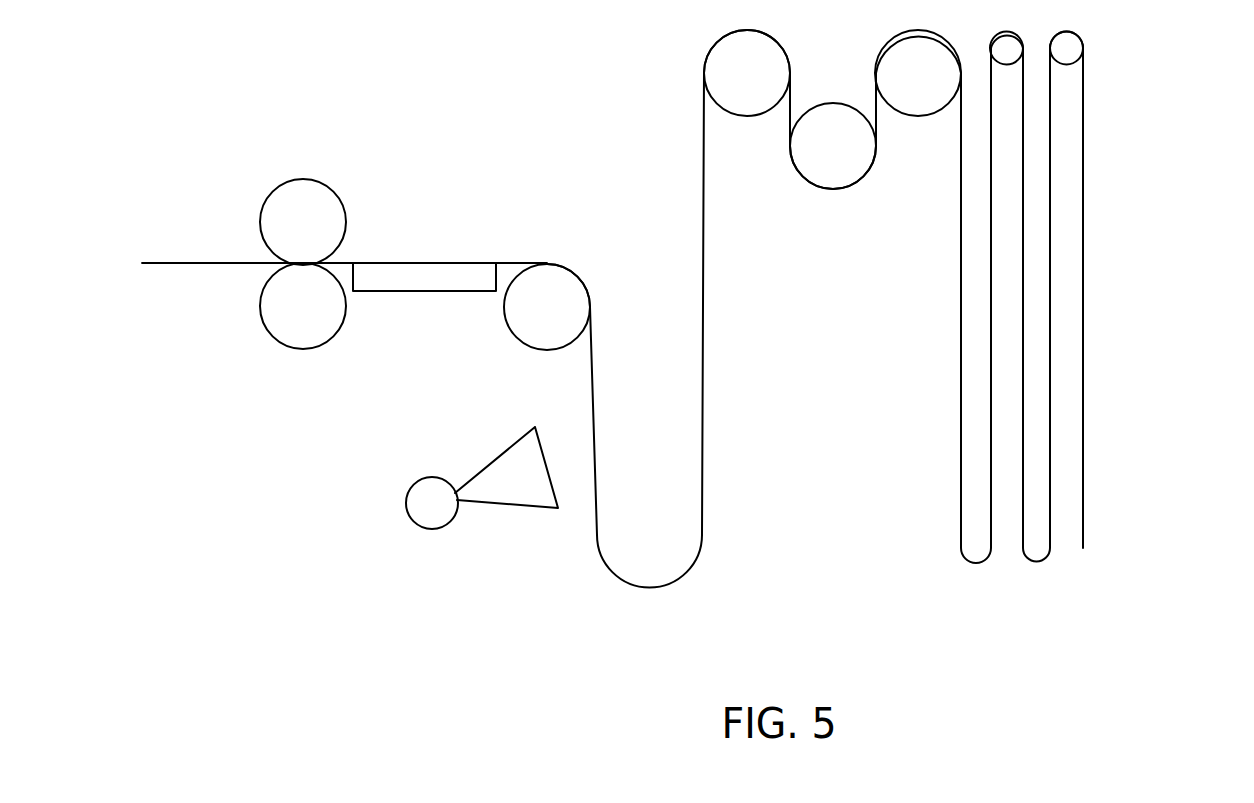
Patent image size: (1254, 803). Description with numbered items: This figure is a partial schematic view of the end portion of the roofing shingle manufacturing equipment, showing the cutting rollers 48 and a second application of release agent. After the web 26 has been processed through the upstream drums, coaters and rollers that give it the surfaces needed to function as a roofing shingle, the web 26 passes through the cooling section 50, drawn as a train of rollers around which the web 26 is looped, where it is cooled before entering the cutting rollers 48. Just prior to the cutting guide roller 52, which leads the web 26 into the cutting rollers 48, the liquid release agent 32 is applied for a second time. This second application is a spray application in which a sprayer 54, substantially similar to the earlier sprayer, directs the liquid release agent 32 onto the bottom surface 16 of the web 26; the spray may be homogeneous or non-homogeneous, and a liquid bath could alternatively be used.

The cutting rollers 48 is at (232, 205).
The cutting guide roller 52 is at (558, 280).
The bottom surface 16 is at (592, 382).
The web 26 is at (632, 600).
The cooling section 50 is at (1158, 192).
The liquid release agent 32 is at (508, 510).
The sprayer 54 is at (400, 537).